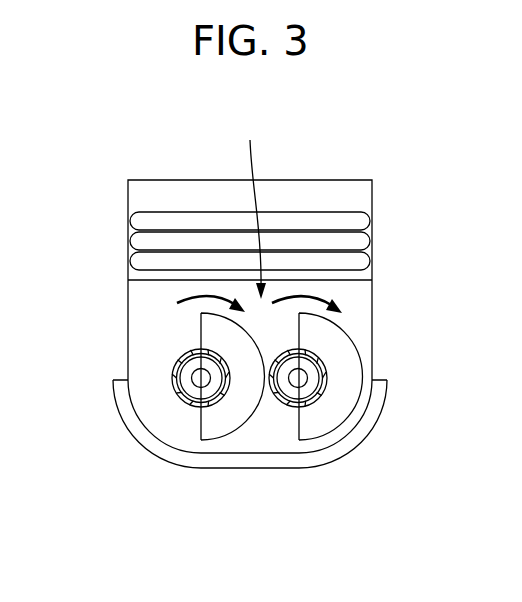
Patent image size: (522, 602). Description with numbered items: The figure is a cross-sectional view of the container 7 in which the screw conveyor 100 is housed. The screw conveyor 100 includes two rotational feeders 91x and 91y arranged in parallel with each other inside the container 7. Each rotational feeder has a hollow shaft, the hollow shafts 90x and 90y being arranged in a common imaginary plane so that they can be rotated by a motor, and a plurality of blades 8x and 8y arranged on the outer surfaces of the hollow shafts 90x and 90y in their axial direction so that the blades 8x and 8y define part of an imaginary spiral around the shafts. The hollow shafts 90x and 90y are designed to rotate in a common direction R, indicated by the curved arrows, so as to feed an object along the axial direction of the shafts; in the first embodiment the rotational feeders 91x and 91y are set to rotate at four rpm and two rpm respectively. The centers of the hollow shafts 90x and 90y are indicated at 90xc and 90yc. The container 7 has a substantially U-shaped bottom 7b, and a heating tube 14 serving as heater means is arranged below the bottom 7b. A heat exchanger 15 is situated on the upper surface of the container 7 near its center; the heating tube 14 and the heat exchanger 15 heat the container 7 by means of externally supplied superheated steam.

The container 7 is at (127, 295).
The bottom 7b is at (247, 453).
The blades 8x is at (220, 428).
The blades 8y is at (347, 355).
The heating tube 14 is at (288, 470).
The heat exchanger 15 is at (312, 192).
The hollow shaft 90x is at (187, 402).
The first roller shaft 90xc is at (201, 378).
The hollow shaft 90y is at (318, 398).
The second roller shaft 90yc is at (298, 378).
The rotational feeder 91x is at (158, 355).
The rotational feeder 91y is at (359, 328).
The screw conveyor 100 is at (255, 203).
The direction R is at (207, 297).